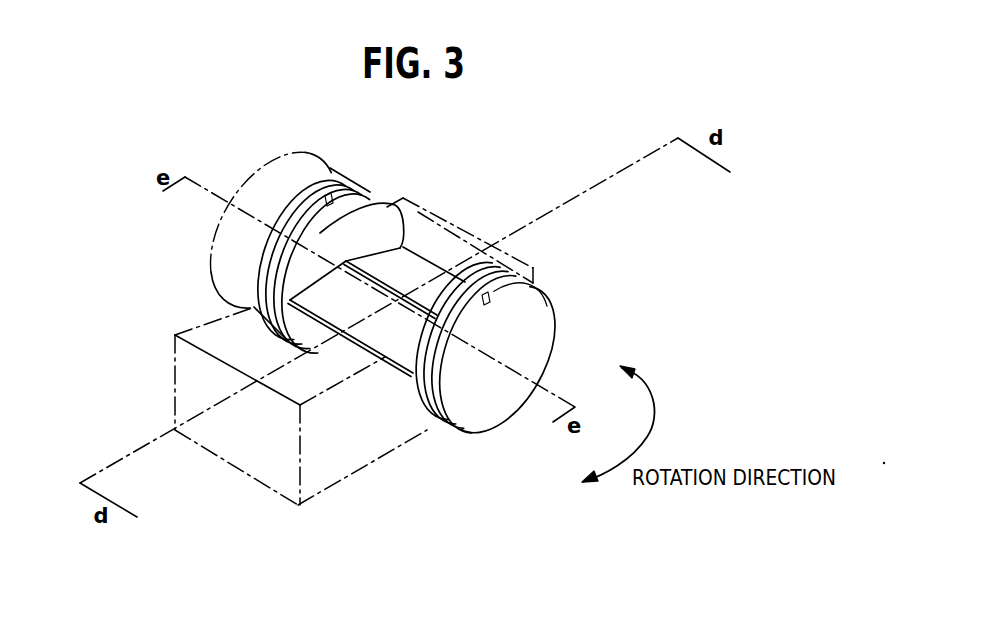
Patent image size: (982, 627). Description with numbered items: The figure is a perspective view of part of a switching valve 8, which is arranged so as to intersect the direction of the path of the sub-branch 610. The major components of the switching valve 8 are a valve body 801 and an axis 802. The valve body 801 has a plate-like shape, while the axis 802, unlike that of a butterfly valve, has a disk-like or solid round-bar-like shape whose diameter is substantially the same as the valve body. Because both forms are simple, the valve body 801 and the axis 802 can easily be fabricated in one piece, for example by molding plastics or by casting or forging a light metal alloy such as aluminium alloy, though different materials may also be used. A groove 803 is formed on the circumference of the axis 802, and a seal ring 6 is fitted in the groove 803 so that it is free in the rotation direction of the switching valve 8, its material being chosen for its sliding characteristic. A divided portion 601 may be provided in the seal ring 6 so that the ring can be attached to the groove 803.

The switching valve 8 is at (500, 422).
The valve body 801 is at (413, 262).
The axis 802 is at (456, 427).
The groove 803 is at (476, 432).
The seal ring 6 is at (427, 430).
The divided portion 601 is at (487, 290).
The sub-branch 610 is at (342, 447).